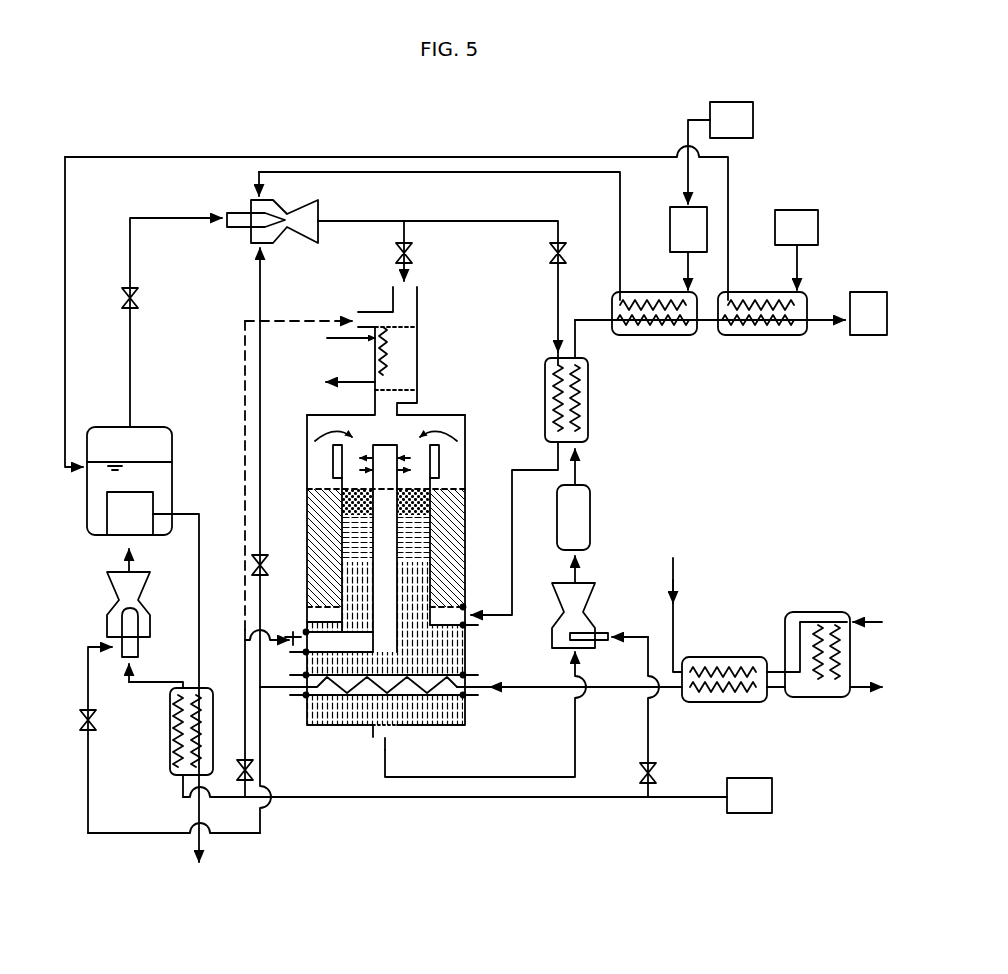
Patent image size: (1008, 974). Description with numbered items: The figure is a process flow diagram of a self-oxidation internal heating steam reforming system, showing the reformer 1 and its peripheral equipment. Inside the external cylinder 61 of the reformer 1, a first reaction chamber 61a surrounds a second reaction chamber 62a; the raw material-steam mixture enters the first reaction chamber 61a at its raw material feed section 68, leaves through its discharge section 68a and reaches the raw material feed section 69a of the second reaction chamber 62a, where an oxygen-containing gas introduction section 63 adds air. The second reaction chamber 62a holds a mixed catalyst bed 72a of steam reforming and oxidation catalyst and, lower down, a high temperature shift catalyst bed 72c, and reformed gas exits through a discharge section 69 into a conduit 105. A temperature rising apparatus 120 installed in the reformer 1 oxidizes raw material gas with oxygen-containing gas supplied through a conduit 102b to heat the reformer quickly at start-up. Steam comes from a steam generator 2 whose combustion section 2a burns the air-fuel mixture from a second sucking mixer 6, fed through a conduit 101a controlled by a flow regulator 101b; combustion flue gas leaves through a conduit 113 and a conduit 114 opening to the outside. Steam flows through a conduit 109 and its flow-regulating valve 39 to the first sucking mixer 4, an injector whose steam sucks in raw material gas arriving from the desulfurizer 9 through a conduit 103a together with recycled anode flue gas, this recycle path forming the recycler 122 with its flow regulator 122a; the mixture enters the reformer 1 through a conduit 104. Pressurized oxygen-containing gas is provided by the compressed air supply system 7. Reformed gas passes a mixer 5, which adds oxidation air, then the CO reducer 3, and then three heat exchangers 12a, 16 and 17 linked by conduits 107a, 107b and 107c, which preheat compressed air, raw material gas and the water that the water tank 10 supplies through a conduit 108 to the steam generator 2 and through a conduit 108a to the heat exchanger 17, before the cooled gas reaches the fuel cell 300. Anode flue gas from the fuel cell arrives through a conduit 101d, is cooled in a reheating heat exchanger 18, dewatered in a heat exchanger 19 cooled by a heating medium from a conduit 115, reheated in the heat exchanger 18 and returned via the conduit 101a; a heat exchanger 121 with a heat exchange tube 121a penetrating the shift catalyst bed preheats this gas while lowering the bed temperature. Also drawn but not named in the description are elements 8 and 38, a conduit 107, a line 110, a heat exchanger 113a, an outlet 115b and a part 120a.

The reformer 1 is at (464, 400).
The steam generator 2 is at (172, 437).
The combustion section 2a is at (112, 512).
The CO reducer 3 is at (592, 533).
The first sucking mixer 4 is at (298, 207).
The mixer 5 is at (590, 607).
The second sucking mixer 6 is at (113, 588).
The compressed air supply system 7 is at (773, 798).
The gas supply source 8 is at (753, 122).
The desulfurizer 9 is at (670, 230).
The water tank 10 is at (795, 212).
The heat exchanger 12a is at (590, 423).
The heat exchanger 16 is at (665, 337).
The heat exchanger 17 is at (766, 337).
The heat exchanger for reheating 18 is at (733, 657).
The heat exchanger for dewatering 19 is at (822, 612).
The valve 38 is at (655, 768).
The flow-regulating valve 39 is at (122, 297).
The external cylinder 61 is at (466, 438).
The first reaction chamber 61a is at (312, 540).
The second reaction chamber 62a is at (455, 537).
The oxygen-containing gas introduction section 63 is at (426, 394).
The raw material feed section 68 is at (462, 608).
The discharge section 68a is at (322, 450).
The discharge section 69 is at (390, 738).
The raw material feed section 69a is at (367, 438).
The mixed catalyst bed 72a is at (327, 717).
The high temperature shift catalyst bed 72c is at (462, 662).
The conduit 101a is at (245, 393).
The flow regulator 101b is at (80, 717).
The conduit 101d is at (673, 583).
The conduit 102b is at (243, 345).
The conduit 103a is at (458, 175).
The conduit 104 is at (370, 221).
The conduit 105 is at (462, 776).
The gas line 107 is at (577, 476).
The conduit 107a is at (596, 325).
The conduit 107b is at (708, 324).
The conduit 107c is at (817, 325).
The conduit 108 is at (483, 155).
The conduit 108a is at (805, 270).
The conduit 109 is at (152, 322).
The liquid line 110 is at (649, 736).
The conduit 113 is at (183, 512).
The heat exchanger 113a is at (168, 733).
The conduit 114 is at (200, 847).
The conduit 115 is at (877, 620).
The coolant outlet line 115b is at (855, 697).
The temperature rising apparatus 120 is at (421, 358).
The heater 120a is at (352, 335).
The heat exchanger 121 is at (452, 692).
The heat exchange tube 121a is at (410, 713).
The recycler 122 is at (252, 294).
The flow regulator 122a is at (250, 560).
The fuel cell 300 is at (867, 337).